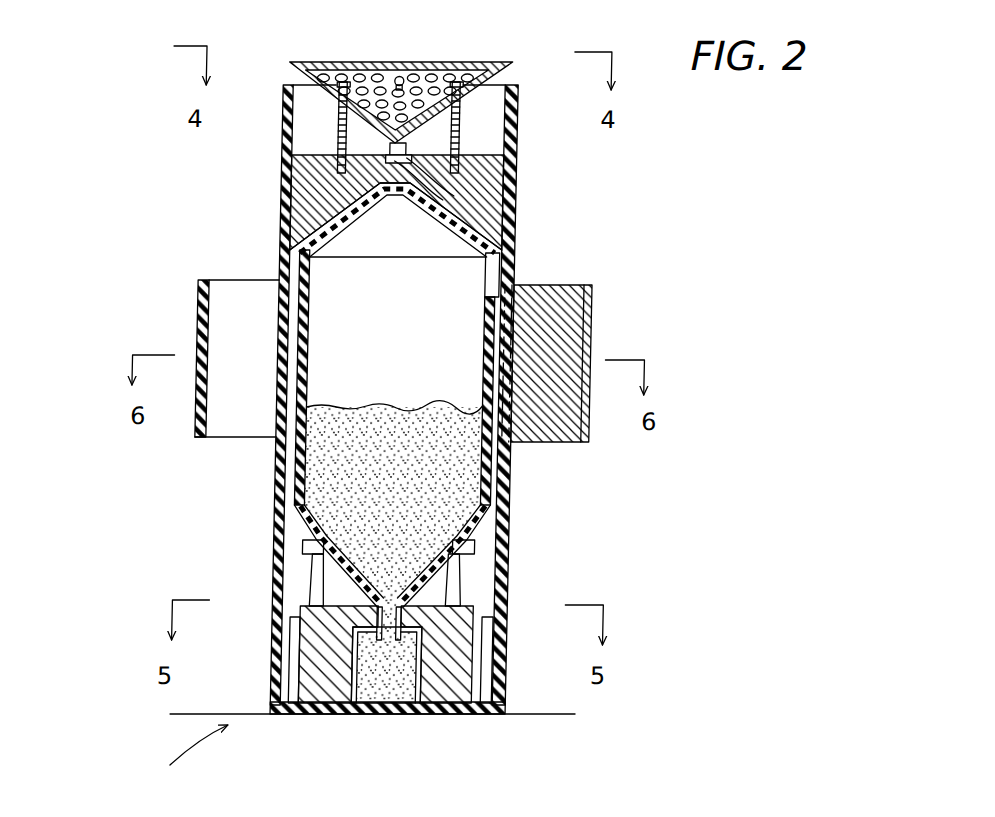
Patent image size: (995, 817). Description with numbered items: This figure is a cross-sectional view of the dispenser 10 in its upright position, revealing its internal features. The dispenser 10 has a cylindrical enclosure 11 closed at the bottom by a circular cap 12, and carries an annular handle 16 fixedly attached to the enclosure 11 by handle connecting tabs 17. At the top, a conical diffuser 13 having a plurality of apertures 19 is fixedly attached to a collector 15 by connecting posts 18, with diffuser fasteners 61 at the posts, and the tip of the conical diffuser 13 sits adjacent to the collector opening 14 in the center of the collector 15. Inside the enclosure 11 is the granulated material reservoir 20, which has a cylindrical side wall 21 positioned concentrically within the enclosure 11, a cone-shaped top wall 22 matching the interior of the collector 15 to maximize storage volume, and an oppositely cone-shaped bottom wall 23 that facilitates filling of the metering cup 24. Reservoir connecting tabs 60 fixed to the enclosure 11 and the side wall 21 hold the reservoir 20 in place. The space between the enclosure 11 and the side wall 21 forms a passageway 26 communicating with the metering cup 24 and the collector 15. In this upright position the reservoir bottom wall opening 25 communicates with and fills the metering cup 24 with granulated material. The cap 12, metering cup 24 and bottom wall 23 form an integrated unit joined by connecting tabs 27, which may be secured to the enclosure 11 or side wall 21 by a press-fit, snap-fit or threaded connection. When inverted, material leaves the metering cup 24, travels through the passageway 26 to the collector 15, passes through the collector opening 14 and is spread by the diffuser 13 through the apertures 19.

The dispenser 10 is at (113, 357).
The cylindrical enclosure 11 is at (520, 488).
The circular cap 12 is at (521, 690).
The conical diffuser 13 is at (517, 78).
The collector opening 14 is at (508, 214).
The collector 15 is at (334, 194).
The annular handle 16 is at (207, 313).
The handle connecting tabs 17 is at (251, 280).
The connecting posts 18 is at (340, 130).
The apertures 19 is at (362, 73).
The granulated material reservoir 20 is at (306, 478).
The side wall 21 is at (305, 498).
The top wall 22 is at (355, 225).
The bottom wall 23 is at (352, 590).
The metering cup 24 is at (369, 676).
The reservoir bottom wall opening 25 is at (413, 700).
The passageway 26 is at (302, 435).
The connecting tabs 27 is at (472, 587).
The reservoir connecting tabs 60 is at (515, 460).
The diffuser fasteners 61 is at (345, 82).